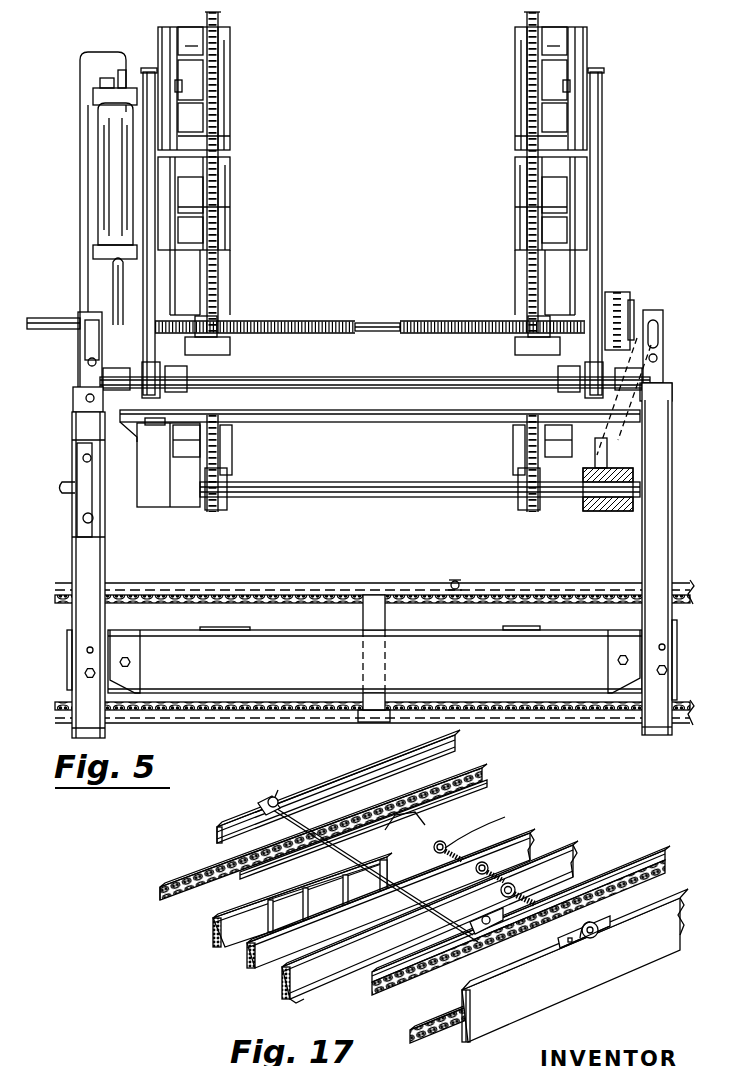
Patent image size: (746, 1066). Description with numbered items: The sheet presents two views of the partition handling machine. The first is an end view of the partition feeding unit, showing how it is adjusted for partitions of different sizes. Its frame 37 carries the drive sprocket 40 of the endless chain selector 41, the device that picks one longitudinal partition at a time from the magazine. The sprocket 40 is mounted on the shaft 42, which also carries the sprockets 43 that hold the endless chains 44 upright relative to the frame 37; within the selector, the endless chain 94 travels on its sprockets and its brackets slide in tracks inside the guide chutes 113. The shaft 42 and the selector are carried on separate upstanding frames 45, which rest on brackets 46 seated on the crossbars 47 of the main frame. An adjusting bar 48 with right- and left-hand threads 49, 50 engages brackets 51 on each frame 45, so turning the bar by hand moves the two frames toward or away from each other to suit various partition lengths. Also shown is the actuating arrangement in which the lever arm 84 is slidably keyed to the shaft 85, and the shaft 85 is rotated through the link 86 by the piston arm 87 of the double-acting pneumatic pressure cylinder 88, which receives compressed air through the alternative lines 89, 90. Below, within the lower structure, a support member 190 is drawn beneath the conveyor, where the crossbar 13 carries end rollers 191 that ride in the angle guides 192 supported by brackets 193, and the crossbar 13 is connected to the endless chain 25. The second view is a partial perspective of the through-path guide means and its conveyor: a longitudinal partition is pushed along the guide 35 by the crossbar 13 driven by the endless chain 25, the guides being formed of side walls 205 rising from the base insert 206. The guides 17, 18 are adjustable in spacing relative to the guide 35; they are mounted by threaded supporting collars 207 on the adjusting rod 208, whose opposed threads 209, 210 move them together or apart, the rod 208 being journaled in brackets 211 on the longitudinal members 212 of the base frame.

In FIG. 5, the crossbar 13 is at (462, 583).
In FIG. 17, the crossbar 13 is at (260, 832).
In FIG. 17, the guide 17 is at (281, 992).
In FIG. 17, the guide 18 is at (208, 942).
In FIG. 5, the endless chain 25 is at (265, 600).
In FIG. 17, the endless chain 25 is at (188, 875).
In FIG. 17, the guide 35 is at (245, 968).
In FIG. 5, the frame 37 is at (82, 567).
In FIG. 5, the drive sprocket 40 is at (616, 512).
In FIG. 5, the endless chain selector 41 is at (224, 50).
In FIG. 5, the shaft 42 is at (421, 488).
In FIG. 5, the sprockets 43 is at (230, 500).
In FIG. 5, the endless chains 44 is at (216, 44).
In FIG. 5, the frames 45 is at (168, 500).
In FIG. 5, the brackets 46 is at (228, 410).
In FIG. 5, the crossbars 47 is at (392, 413).
In FIG. 5, the adjusting bar 48 is at (376, 321).
In FIG. 5, the right-hand thread 49 is at (308, 321).
In FIG. 5, the left-hand thread 50 is at (436, 321).
In FIG. 5, the brackets 51 is at (232, 338).
In FIG. 5, the lever arm 84 is at (147, 193).
In FIG. 5, the shaft 85 is at (323, 388).
In FIG. 5, the link 86 is at (110, 372).
In FIG. 5, the piston arm 87 is at (118, 282).
In FIG. 5, the double-acting pneumatic pressure cylinder 88 is at (108, 160).
In FIG. 5, the air line 89 is at (93, 100).
In FIG. 5, the air line 90 is at (92, 253).
In FIG. 5, the endless chain 94 is at (228, 80).
In FIG. 5, the guide chutes 113 is at (232, 168).
In FIG. 5, the support box beam 190 is at (547, 637).
In FIG. 5, the end rollers 191 is at (452, 582).
In FIG. 17, the end rollers 191 is at (275, 802).
In FIG. 5, the angle guides 192 is at (330, 585).
In FIG. 17, the angle guides 192 is at (347, 774).
In FIG. 5, the brackets 193 is at (385, 612).
In FIG. 17, the side walls 205 is at (303, 960).
In FIG. 17, the base insert 206 is at (279, 992).
In FIG. 17, the threaded supporting collars 207 is at (436, 848).
In FIG. 17, the adjusting rod 208 is at (588, 905).
In FIG. 17, the thread 209 is at (520, 905).
In FIG. 17, the thread 210 is at (505, 815).
In FIG. 17, the brackets 211 is at (588, 943).
In FIG. 17, the longitudinal members 212 is at (485, 788).